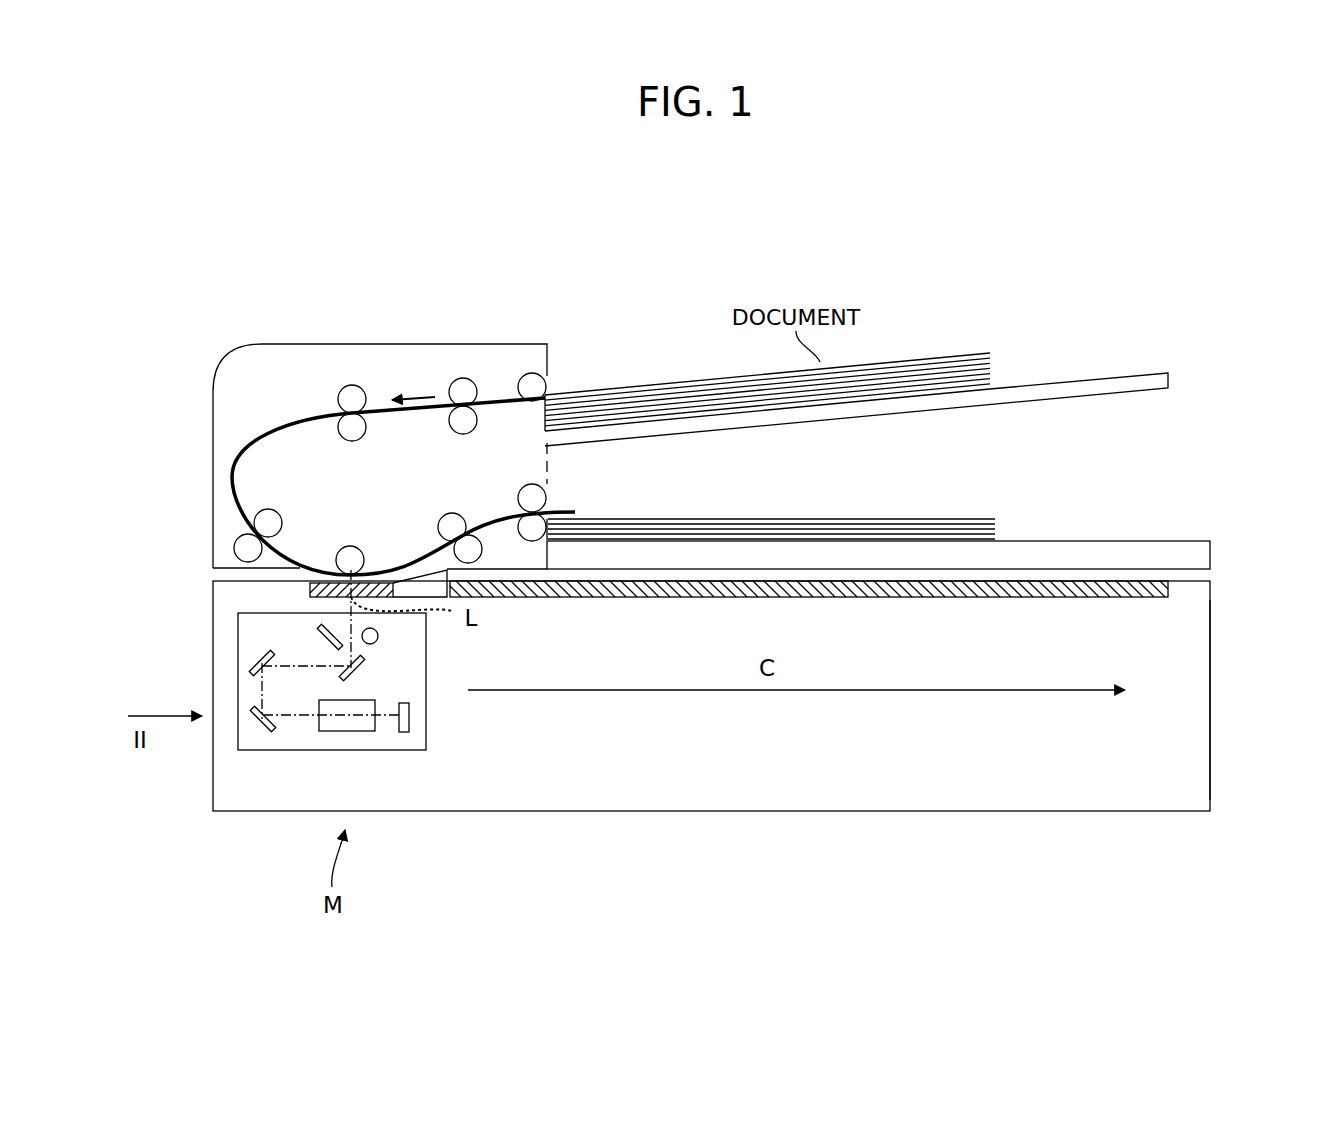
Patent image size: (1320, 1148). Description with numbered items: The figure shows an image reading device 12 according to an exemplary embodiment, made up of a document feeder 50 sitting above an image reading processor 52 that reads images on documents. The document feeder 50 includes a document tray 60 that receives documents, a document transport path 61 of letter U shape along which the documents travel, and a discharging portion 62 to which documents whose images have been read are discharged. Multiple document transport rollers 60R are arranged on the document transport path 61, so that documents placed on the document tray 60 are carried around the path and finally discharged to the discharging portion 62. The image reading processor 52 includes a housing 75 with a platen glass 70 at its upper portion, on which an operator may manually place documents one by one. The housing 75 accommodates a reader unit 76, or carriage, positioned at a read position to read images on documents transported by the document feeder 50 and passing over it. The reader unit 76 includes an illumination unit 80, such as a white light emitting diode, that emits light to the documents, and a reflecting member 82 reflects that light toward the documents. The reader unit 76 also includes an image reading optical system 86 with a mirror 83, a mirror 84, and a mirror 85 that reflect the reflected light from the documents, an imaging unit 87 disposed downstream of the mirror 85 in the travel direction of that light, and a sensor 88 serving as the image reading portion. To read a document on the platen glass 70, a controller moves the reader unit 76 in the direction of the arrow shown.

The image reading device 12 is at (1165, 237).
The document feeder 50 is at (1033, 316).
The image reading processor 52 is at (1128, 826).
The document tray 60 is at (852, 412).
The document transport rollers 60R is at (352, 398).
The document transport path 61 is at (297, 418).
The discharging portion 62 is at (1097, 540).
The platen glass 70 is at (935, 598).
The housing 75 is at (1210, 672).
The reader unit 76 is at (436, 731).
The illumination unit 80 is at (378, 637).
The reflecting member 82 is at (320, 634).
The mirror 83 is at (364, 668).
The mirror 84 is at (256, 661).
The mirror 85 is at (270, 745).
The image reading optical system 86 is at (408, 661).
The imaging unit 87 is at (350, 733).
The sensor 88 is at (405, 735).